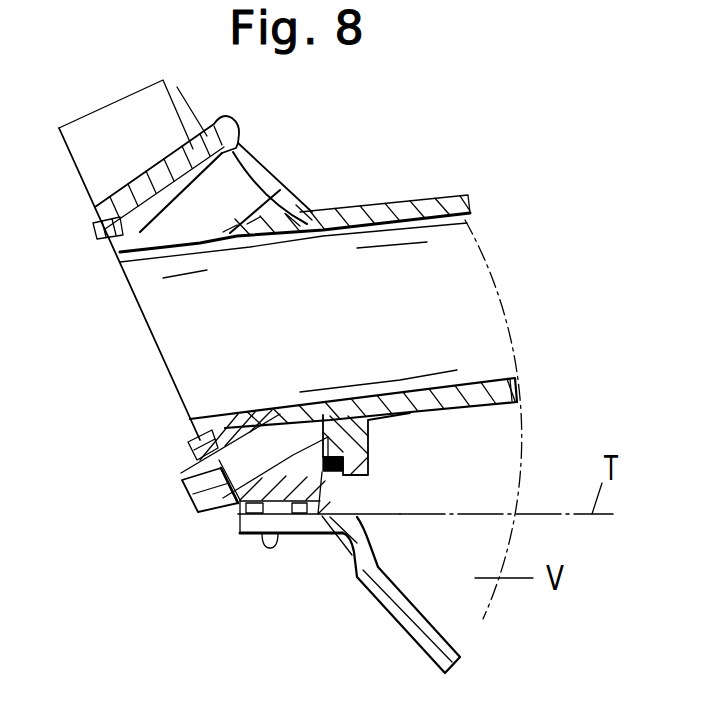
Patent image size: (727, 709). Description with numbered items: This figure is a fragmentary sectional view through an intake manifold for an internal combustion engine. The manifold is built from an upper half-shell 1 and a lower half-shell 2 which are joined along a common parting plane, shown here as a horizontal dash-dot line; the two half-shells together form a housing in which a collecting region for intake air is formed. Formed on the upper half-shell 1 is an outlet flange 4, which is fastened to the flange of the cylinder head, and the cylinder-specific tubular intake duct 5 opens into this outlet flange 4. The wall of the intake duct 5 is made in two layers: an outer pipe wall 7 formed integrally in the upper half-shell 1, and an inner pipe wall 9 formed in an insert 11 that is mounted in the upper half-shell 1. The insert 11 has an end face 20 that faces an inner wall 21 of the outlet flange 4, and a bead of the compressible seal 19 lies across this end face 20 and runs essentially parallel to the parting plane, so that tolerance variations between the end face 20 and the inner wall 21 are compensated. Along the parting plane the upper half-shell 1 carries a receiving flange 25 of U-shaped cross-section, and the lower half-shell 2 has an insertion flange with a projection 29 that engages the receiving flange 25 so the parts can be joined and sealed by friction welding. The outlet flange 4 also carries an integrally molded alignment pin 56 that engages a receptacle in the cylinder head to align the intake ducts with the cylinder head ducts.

The upper half-shell 1 is at (412, 208).
The outer pipe wall 7 is at (333, 234).
The intake duct 5 is at (448, 283).
The inner pipe wall 9 is at (465, 388).
The insert 11 is at (490, 397).
The end face 20 is at (375, 430).
The inner wall 21 is at (335, 412).
The seal 19 is at (330, 471).
The outlet flange 4 is at (200, 429).
The alignment pin 56 is at (200, 497).
The receiving flange 25 is at (242, 507).
The projection 29 is at (250, 543).
The lower half-shell 2 is at (363, 533).